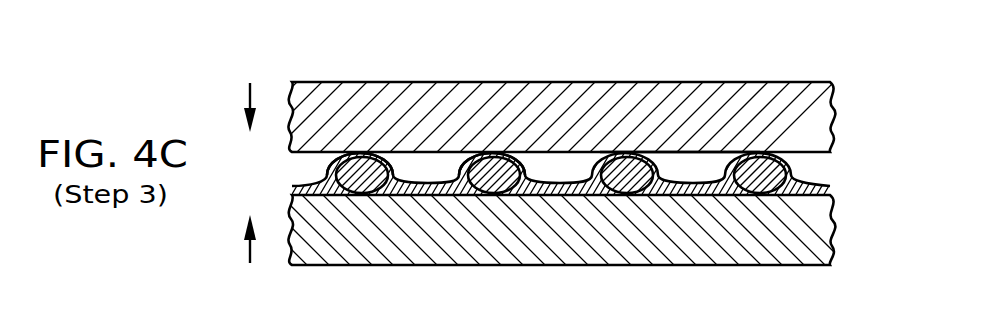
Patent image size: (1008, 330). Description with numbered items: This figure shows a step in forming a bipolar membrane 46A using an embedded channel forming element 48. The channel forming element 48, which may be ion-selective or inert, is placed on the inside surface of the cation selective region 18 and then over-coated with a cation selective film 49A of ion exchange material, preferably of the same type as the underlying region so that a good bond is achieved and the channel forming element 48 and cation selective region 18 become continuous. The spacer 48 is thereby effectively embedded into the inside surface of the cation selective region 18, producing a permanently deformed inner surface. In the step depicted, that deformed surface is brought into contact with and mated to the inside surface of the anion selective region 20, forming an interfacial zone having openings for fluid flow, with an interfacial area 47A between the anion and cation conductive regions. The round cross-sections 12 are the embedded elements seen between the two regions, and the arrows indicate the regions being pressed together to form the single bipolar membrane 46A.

The bipolar membrane 46A is at (283, 63).
The interfacial area 47A is at (367, 152).
The anion selective region 20 is at (673, 82).
The cation selective film 49A is at (665, 152).
The channel forming element 48 is at (785, 177).
The cation selective region 18 is at (832, 217).
The fibers / strands 12 is at (560, 168).